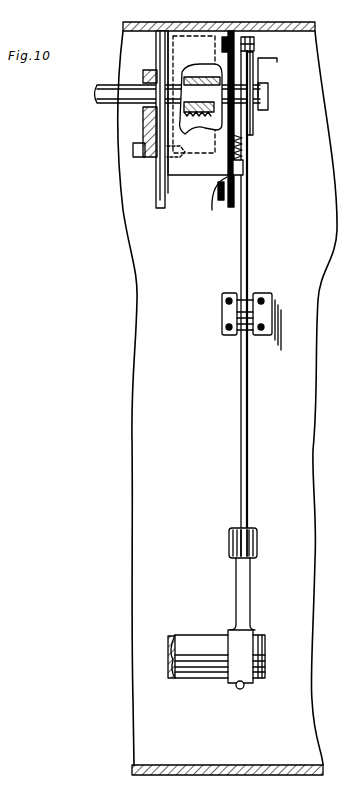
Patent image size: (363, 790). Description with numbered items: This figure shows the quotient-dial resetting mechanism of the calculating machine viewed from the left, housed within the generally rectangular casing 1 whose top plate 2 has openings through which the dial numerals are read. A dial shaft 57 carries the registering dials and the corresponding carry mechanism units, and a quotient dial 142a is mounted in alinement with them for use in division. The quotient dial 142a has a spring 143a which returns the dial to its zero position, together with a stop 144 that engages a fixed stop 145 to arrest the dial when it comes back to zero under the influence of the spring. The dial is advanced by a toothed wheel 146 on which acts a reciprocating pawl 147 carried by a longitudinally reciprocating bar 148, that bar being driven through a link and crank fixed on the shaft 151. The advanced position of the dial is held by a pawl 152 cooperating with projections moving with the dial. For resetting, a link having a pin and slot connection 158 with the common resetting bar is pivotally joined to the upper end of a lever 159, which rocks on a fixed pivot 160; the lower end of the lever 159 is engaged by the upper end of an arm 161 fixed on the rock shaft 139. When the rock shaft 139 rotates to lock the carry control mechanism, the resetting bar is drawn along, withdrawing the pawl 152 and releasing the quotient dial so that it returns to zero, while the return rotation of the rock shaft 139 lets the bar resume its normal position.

The casing 1 is at (134, 745).
The top plate 2 is at (316, 28).
The dial shaft 57 is at (105, 104).
The rock shaft 139 is at (190, 646).
The quotient dial 142a is at (200, 177).
The spring 143a is at (220, 62).
The stop 144 is at (179, 151).
The fixed stop 145 is at (171, 150).
The toothed wheel 146 is at (255, 128).
The reciprocating pawl 147 is at (243, 141).
The longitudinally reciprocating bar 148 is at (237, 172).
The shaft 151 is at (223, 44).
The pawl 152 is at (214, 200).
The pin and slot connection 158 is at (254, 41).
The lever 159 is at (241, 405).
The fixed pivot 160 is at (226, 312).
The arm 161 is at (258, 542).